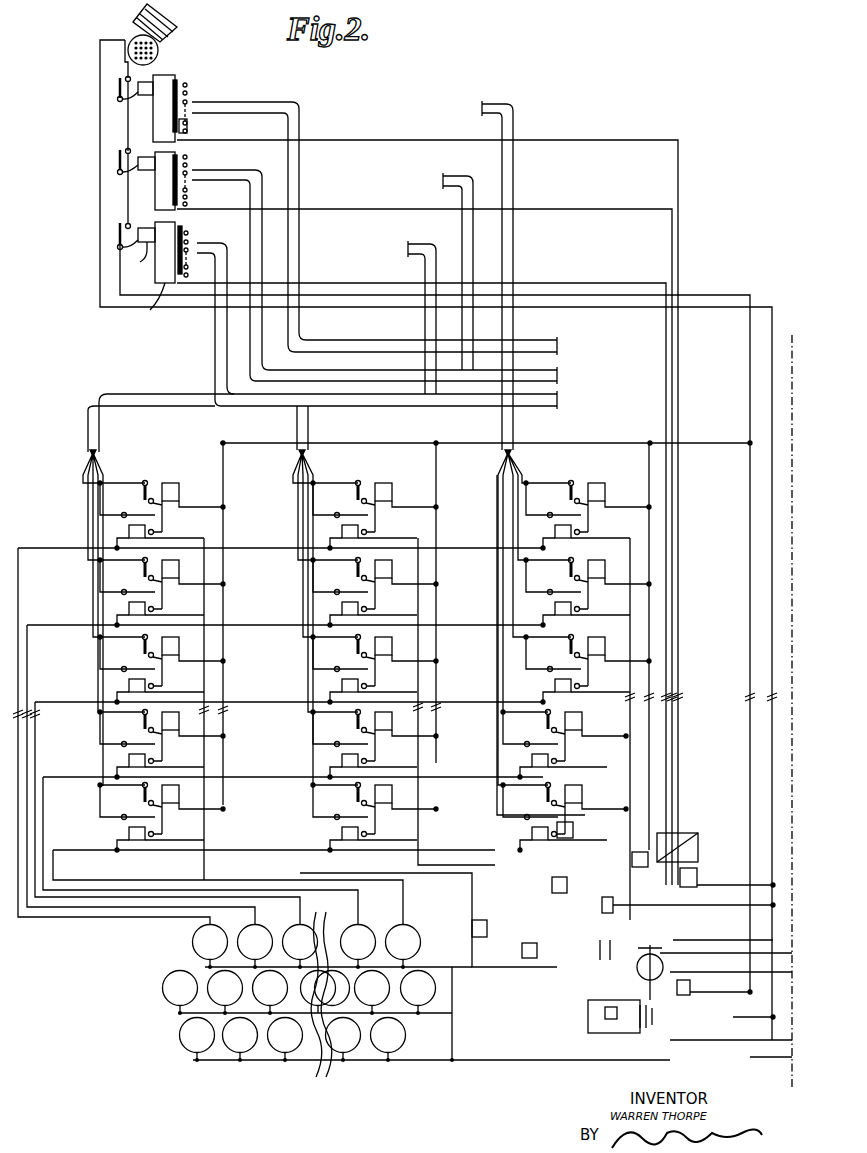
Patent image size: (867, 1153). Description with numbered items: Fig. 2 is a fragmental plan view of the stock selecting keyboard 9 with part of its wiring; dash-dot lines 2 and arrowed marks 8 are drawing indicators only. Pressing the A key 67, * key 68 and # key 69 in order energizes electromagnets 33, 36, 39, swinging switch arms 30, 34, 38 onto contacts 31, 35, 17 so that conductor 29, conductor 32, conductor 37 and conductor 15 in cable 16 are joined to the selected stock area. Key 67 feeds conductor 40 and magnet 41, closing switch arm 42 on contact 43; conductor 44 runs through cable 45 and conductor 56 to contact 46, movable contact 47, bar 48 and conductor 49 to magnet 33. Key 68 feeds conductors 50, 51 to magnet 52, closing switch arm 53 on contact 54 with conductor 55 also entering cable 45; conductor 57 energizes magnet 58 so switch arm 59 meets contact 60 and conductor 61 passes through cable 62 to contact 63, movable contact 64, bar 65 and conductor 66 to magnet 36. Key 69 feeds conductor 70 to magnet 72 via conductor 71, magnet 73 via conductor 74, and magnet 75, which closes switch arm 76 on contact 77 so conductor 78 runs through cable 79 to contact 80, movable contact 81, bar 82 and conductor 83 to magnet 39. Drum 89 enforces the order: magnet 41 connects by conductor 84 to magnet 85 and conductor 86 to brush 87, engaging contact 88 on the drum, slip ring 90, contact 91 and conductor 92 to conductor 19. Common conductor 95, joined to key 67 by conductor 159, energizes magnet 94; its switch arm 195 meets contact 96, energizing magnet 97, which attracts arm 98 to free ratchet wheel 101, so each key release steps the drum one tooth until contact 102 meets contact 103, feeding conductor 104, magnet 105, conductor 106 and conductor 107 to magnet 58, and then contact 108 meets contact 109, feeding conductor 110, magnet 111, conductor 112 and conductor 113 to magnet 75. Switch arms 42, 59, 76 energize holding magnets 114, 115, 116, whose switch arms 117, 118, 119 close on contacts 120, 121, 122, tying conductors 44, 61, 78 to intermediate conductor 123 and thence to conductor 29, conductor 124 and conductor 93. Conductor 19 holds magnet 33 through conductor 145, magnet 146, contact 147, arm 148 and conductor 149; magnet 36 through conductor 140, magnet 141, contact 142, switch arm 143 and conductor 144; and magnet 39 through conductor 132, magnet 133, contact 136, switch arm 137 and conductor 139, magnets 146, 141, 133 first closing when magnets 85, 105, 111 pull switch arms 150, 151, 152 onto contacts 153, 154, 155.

The section line 2 is at (789, 714).
The section line 8 is at (652, 982).
The keyboard 9 is at (150, 1015).
The microphone 15 is at (128, 47).
The microphone handle 16 is at (133, 15).
The microphone lead 17 is at (126, 77).
The frame conductor 19 is at (100, 70).
The power conductor 29 is at (580, 297).
The switch contact 30 is at (118, 237).
The switch contact 31 is at (126, 225).
The conductor 32 is at (128, 200).
The conductor 33 is at (119, 249).
The switch contact 34 is at (118, 162).
The switch contact 35 is at (126, 150).
The conductor 36 is at (119, 174).
The conductor 37 is at (128, 122).
The switch contact 38 is at (118, 87).
The conductor 39 is at (117, 100).
The conductor group 40 is at (35, 548).
The indicator box A 41 is at (128, 530).
The conductor 42 is at (124, 515).
The contact 43 is at (153, 522).
The tube 44 is at (198, 250).
The tube 45 is at (128, 394).
The relay 46 is at (188, 233).
The contact strip 47 is at (178, 260).
The conductor 48 is at (165, 285).
The coil 49 is at (137, 256).
The conductor 50 is at (45, 800).
The indicator box 51 is at (120, 762).
The contact 52 is at (151, 762).
The conductor 53 is at (100, 715).
The contact 54 is at (143, 718).
The conductor 55 is at (100, 726).
The tube 56 is at (213, 372).
The conductor 57 is at (330, 770).
The conductor 58 is at (335, 750).
The conductor 59 is at (313, 723).
The relay 60 is at (375, 760).
The tube 61 is at (205, 172).
The tube 62 is at (308, 425).
The conductor 63 is at (186, 200).
The tube 64 is at (262, 182).
The contact strip 65 is at (188, 165).
The relay 66 is at (178, 155).
The key 67 is at (192, 942).
The break line 68 is at (322, 1075).
The key 69 is at (365, 1065).
The conductor 70 is at (88, 848).
The conductor 71 is at (119, 840).
The indicator box 72 is at (127, 826).
The conductor 73 is at (313, 825).
The conductor 74 is at (330, 848).
The relay 75 is at (557, 828).
The conductor 76 is at (545, 835).
The contact 77 is at (548, 835).
The tube 78 is at (194, 104).
The tube 79 is at (502, 423).
The conductor 80 is at (190, 139).
The contact 81 is at (187, 126).
The contact strip 82 is at (185, 86).
The relay 83 is at (165, 75).
The conductor 84 is at (204, 570).
The relay 85 is at (472, 925).
The conductor 86 is at (478, 970).
The conductor 87 is at (595, 1010).
The relay 88 is at (588, 1016).
The conductor 89 is at (600, 1035).
The conductor 90 is at (625, 1040).
The conductor 91 is at (635, 1040).
The conductor 92 is at (700, 1040).
The conductor 93 is at (690, 1005).
The relay 94 is at (683, 995).
The conductor 95 is at (458, 1060).
The conductor 96 is at (665, 960).
The contact 97 is at (668, 945).
The solenoid 98 is at (645, 980).
The conductor 101 is at (640, 1040).
The conductor 102 is at (585, 1030).
The conductor 103 is at (600, 1000).
The conductor 104 is at (577, 913).
The conductor 105 is at (555, 900).
The conductor 106 is at (418, 860).
The conductor 107 is at (436, 764).
The conductor 108 is at (600, 970).
The conductor 109 is at (615, 1035).
The contact 110 is at (620, 935).
The contact 111 is at (630, 882).
The conductor 112 is at (640, 775).
The relay 113 is at (573, 832).
The relay 114 is at (166, 483).
The relay 115 is at (395, 722).
The relay 116 is at (595, 790).
The contact 117 is at (143, 483).
The conductor 118 is at (313, 715).
The relay 119 is at (540, 772).
The contact 120 is at (151, 500).
The conductor 121 is at (380, 705).
The contact 122 is at (575, 760).
The conductor 123 is at (600, 443).
The conductor 124 is at (750, 1075).
The conductor 132 is at (700, 880).
The relay 133 is at (698, 868).
The relay 136 is at (680, 840).
The contact 137 is at (695, 848).
The conductor 139 is at (352, 142).
The conductor 140 is at (665, 905).
The relay 141 is at (688, 898).
The relay 142 is at (569, 880).
The relay 143 is at (620, 870).
The conductor 144 is at (352, 211).
The conductor 145 is at (733, 912).
The conductor 146 is at (530, 958).
The relay 147 is at (522, 952).
The relay 148 is at (487, 925).
The conductor 149 is at (352, 283).
The conductor 150 is at (472, 935).
The conductor 151 is at (552, 880).
The conductor 152 is at (640, 825).
The conductor 153 is at (487, 912).
The conductor 154 is at (557, 840).
The conductor 155 is at (650, 805).
The conductor 159 is at (445, 1035).
The conductor 195 is at (680, 960).